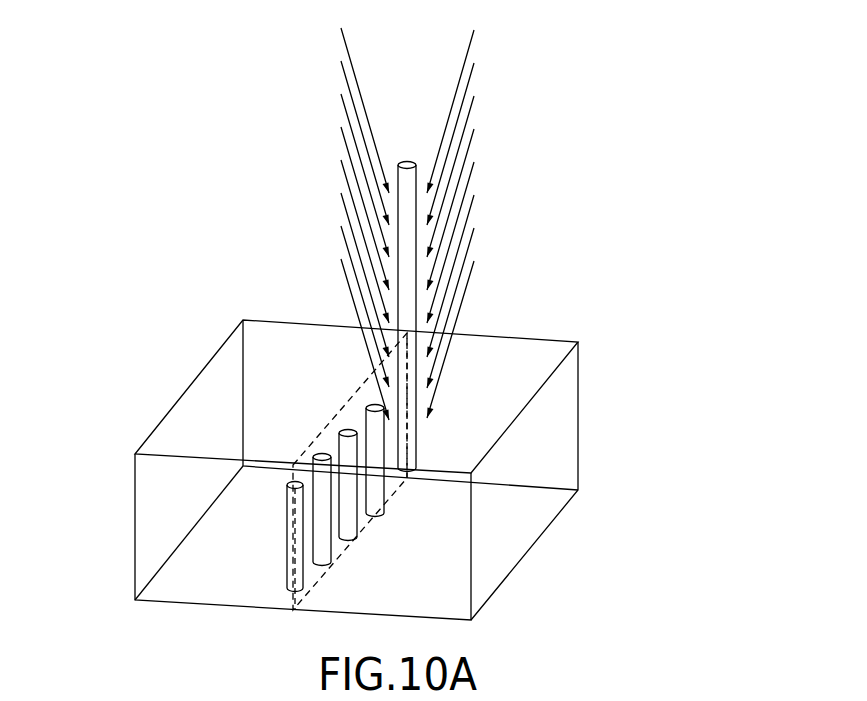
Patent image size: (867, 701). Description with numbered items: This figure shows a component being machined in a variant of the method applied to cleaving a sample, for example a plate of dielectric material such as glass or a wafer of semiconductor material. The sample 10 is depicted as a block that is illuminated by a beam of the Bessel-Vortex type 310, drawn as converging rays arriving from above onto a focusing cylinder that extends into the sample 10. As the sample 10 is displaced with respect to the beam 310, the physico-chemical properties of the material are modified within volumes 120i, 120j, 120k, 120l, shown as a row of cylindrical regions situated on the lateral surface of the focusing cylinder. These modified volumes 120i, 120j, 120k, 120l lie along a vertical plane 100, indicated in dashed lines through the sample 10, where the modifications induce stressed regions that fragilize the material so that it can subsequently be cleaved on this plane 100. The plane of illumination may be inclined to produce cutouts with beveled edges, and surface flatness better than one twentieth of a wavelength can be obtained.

The sample 10 is at (528, 360).
The vertical plane 100 is at (290, 600).
The volume 120i is at (287, 548).
The volume 120j is at (313, 513).
The volume 120k is at (339, 443).
The volume 120l is at (366, 423).
The beam of the Bessel-Vortex type 310 is at (417, 180).